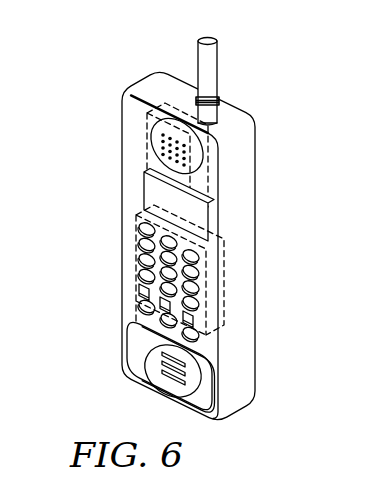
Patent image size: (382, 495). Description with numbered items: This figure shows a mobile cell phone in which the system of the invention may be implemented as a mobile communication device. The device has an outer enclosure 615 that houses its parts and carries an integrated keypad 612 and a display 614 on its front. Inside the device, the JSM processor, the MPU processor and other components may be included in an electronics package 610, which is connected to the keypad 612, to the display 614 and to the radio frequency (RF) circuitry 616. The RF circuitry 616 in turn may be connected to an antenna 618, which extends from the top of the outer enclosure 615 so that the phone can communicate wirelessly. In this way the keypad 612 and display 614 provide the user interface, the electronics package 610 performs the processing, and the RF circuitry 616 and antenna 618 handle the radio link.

The electronics package 610 is at (189, 229).
The integrated keypad 612 is at (137, 262).
The display 614 is at (143, 200).
The outer enclosure 615 is at (246, 370).
The radio frequency (RF) circuitry 616 is at (153, 169).
The antenna 618 is at (219, 70).